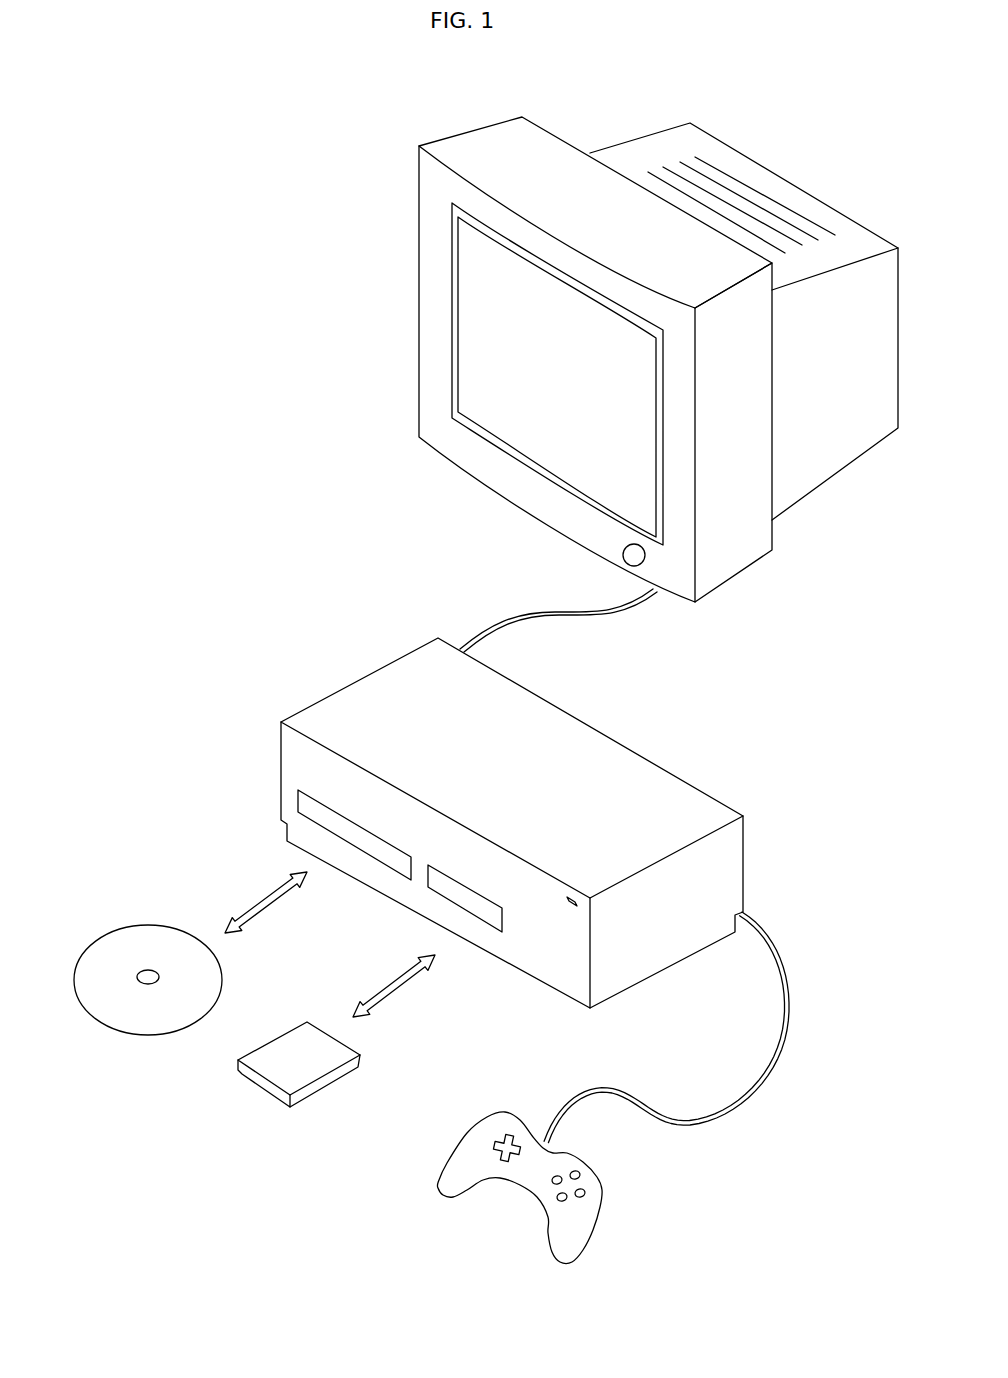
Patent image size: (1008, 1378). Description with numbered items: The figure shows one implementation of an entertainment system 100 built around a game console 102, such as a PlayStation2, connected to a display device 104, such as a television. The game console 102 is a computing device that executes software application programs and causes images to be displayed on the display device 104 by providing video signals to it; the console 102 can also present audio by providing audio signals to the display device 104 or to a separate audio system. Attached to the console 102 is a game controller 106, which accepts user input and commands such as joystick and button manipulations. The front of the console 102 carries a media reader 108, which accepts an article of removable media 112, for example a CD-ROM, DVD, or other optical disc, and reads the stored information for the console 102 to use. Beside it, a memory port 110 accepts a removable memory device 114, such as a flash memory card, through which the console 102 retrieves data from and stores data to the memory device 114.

The entertainment system 100 is at (250, 160).
The game console 102 is at (476, 813).
The display device 104 is at (725, 143).
The game controller 106 is at (600, 1200).
The media reader 108 is at (333, 808).
The memory port 110 is at (490, 897).
The removable media 112 is at (152, 922).
The removable memory device 114 is at (258, 1092).